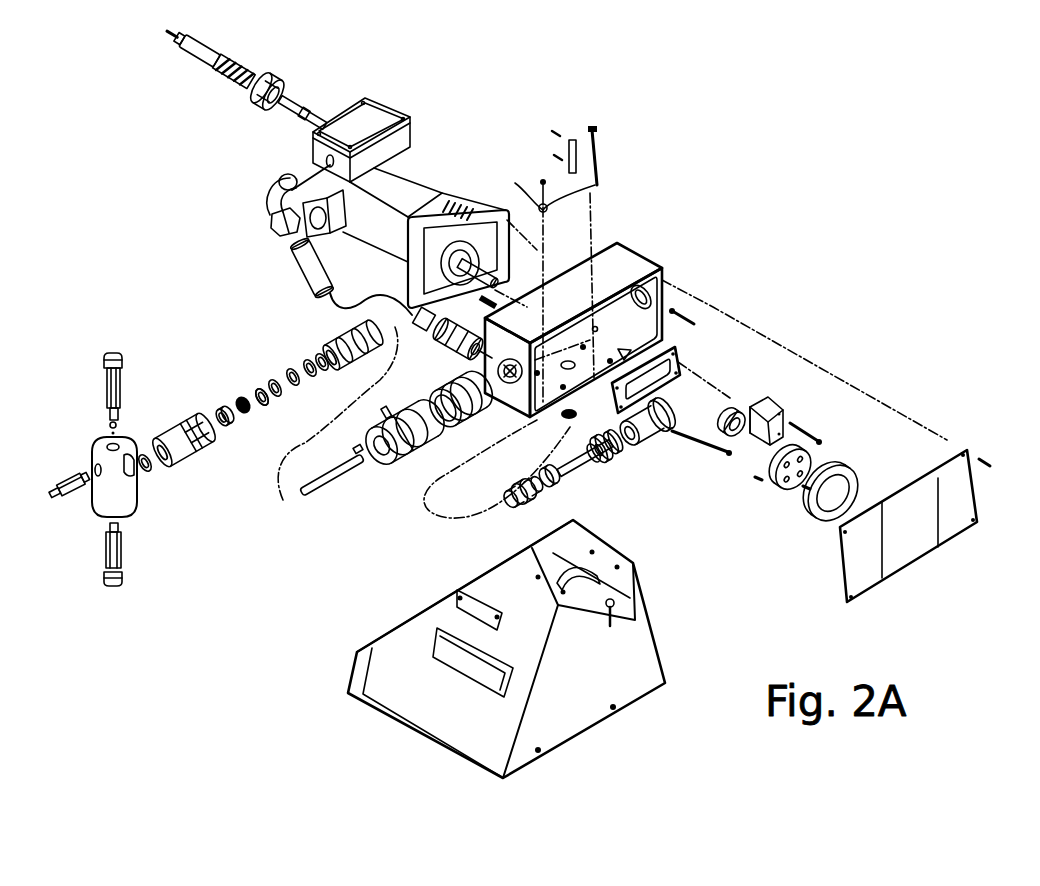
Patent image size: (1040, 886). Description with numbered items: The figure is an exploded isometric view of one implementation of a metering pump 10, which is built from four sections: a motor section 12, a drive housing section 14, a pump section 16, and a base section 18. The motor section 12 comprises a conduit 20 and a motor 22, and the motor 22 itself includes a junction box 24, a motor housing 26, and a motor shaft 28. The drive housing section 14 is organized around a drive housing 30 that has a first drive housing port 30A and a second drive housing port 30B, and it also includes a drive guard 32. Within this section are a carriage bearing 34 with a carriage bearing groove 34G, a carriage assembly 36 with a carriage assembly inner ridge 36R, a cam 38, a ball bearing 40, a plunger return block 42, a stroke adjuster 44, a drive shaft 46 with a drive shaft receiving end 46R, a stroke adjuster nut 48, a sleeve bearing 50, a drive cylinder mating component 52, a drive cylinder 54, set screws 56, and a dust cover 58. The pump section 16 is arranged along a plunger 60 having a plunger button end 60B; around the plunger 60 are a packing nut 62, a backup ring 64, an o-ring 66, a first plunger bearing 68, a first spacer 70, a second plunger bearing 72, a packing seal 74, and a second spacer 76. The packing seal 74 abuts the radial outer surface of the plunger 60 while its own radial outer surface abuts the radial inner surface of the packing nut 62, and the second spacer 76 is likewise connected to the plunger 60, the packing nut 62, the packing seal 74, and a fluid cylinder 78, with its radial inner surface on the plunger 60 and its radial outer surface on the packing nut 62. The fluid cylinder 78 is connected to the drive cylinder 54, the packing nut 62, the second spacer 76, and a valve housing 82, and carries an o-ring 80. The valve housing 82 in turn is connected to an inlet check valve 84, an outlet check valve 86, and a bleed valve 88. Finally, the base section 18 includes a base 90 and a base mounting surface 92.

The metering pump 10 is at (852, 130).
The motor section 12 is at (500, 70).
The drive housing section 14 is at (730, 203).
The pump section 16 is at (178, 320).
The base section 18 is at (622, 750).
The conduit 20 is at (208, 43).
The motor 22 is at (448, 168).
The junction box 24 is at (380, 110).
The motor housing 26 is at (420, 197).
The motor shaft 28 is at (406, 264).
The drive housing 30 is at (617, 244).
The first drive housing port 30A is at (511, 360).
The second drive housing port 30B is at (652, 290).
The drive guard 32 is at (957, 540).
The carriage bearing 34 is at (729, 412).
The carriage bearing groove 34G is at (768, 398).
The carriage assembly 36 is at (674, 352).
The carriage assembly inner ridge 36R is at (683, 365).
The cam 38 is at (812, 458).
The ball bearing 40 is at (858, 472).
The plunger return block 42 is at (778, 400).
The stroke adjuster 44 is at (655, 437).
The drive shaft 46 is at (587, 472).
The drive shaft receiving end 46R is at (566, 467).
The stroke adjuster nut 48 is at (624, 453).
The sleeve bearing 50 is at (552, 483).
The drive cylinder mating component 52 is at (512, 505).
The drive cylinder 54 is at (385, 467).
The set screws 56 is at (388, 415).
The dust cover 58 is at (473, 427).
The plunger 60 is at (305, 497).
The plunger button end 60B is at (360, 455).
The packing nut 62 is at (343, 343).
The backup ring 64 is at (305, 360).
The o-ring 66 is at (285, 372).
The first plunger bearing 68 is at (298, 383).
The first spacer 70 is at (262, 385).
The second plunger bearing 72 is at (260, 407).
The packing seal 74 is at (238, 400).
The second spacer 76 is at (228, 425).
The fluid cylinder 78 is at (180, 426).
The o-ring 80 is at (150, 470).
The valve housing 82 is at (100, 498).
The inlet check valve 84 is at (90, 570).
The outlet check valve 86 is at (89, 387).
The bleed valve 88 is at (53, 460).
The base 90 is at (527, 764).
The base mounting surface 92 is at (636, 549).